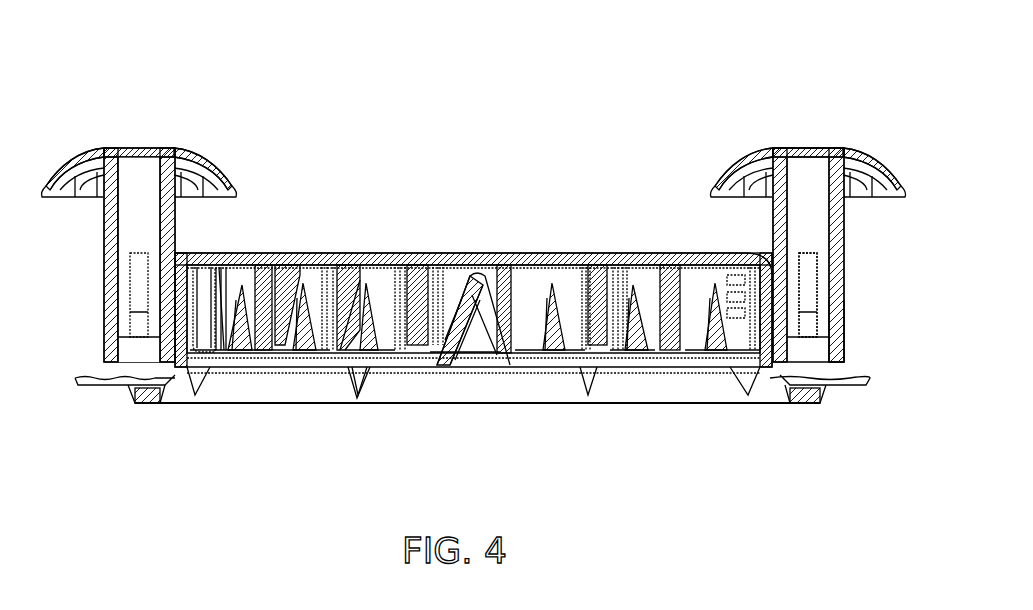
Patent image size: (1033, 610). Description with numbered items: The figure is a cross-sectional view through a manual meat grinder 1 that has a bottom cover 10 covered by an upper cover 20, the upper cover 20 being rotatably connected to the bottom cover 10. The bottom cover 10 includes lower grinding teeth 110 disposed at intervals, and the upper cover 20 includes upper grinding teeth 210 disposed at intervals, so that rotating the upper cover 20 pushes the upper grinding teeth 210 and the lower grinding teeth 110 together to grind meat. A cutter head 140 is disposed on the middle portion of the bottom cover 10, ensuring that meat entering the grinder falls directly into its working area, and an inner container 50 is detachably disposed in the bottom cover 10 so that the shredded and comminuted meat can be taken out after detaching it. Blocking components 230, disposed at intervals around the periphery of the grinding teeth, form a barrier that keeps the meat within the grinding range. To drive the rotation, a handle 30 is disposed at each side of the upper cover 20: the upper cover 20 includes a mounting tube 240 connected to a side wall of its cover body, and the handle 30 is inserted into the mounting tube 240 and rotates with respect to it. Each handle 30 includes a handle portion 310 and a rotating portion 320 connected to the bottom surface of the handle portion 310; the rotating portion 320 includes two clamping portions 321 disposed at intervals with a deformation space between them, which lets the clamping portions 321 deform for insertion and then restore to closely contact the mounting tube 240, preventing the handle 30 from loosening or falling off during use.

The manual meat grinder 1 is at (478, 45).
The bottom cover 10 is at (558, 368).
The upper cover 20 is at (525, 258).
The handle 30 is at (164, 129).
The inner container 50 is at (380, 352).
The lower grinding teeth 110 is at (647, 340).
The cutter head 140 is at (454, 342).
The upper grinding teeth 210 is at (345, 258).
The blocking components 230 is at (216, 255).
The mounting tube 240 is at (840, 330).
The handle portion 310 is at (826, 149).
The rotating portion 320 is at (884, 288).
The clamping portions 321 is at (800, 268).